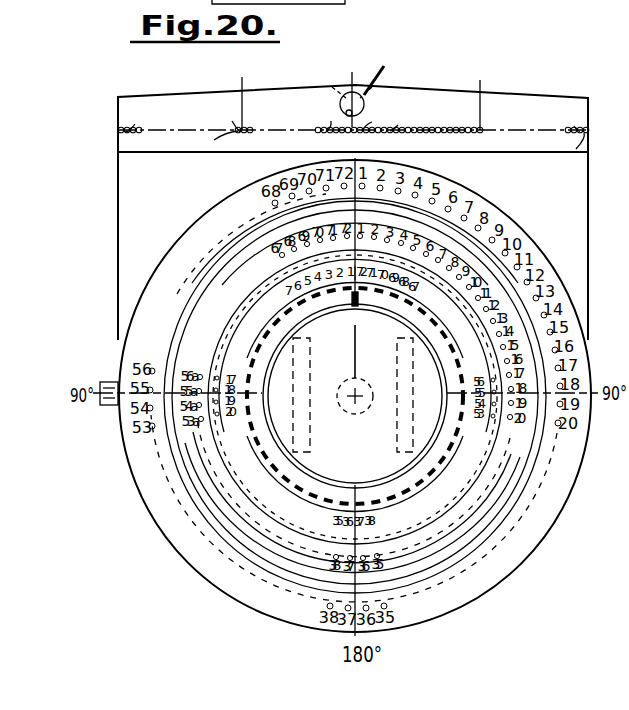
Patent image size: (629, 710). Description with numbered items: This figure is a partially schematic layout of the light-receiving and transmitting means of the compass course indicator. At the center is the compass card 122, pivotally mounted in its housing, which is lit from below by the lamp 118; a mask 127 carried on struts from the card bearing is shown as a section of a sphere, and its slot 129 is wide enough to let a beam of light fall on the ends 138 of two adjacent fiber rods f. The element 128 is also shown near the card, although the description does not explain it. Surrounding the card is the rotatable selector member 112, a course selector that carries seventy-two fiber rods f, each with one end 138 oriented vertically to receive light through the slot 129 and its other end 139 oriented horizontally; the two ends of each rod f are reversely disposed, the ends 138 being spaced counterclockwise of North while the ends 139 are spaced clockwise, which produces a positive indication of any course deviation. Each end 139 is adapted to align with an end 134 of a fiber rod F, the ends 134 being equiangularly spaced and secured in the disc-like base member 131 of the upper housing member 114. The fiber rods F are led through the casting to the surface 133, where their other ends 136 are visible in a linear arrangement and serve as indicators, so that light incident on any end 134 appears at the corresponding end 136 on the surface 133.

The rotatable selector member 112 is at (247, 503).
The upper housing member 114 is at (583, 222).
The lamp 118 is at (370, 401).
The compass card 122 is at (371, 460).
The mask 127 is at (413, 298).
The needle 128 is at (335, 351).
The slot 129 is at (351, 296).
The disc-like base member 131 is at (570, 492).
The surface 133 is at (536, 97).
The ends of fiber rods F' 134 is at (145, 440).
The ends of fiber rods F' 136 is at (211, 169).
The ends of fiber rods f' 138 is at (218, 412).
The ends of fiber rods f' 139 is at (195, 432).
The optical flexible fiber rods F' F is at (224, 206).
The light-receiving and transmitting fiber rods f' f is at (267, 268).